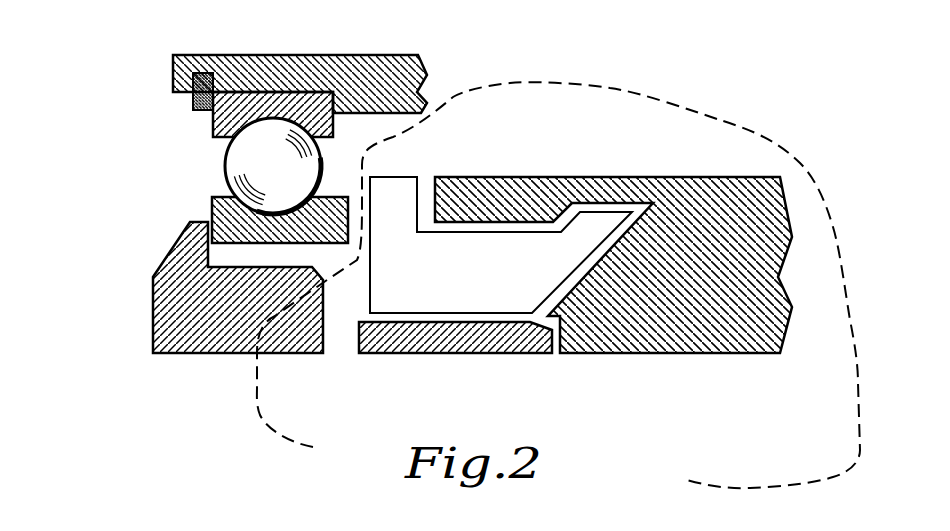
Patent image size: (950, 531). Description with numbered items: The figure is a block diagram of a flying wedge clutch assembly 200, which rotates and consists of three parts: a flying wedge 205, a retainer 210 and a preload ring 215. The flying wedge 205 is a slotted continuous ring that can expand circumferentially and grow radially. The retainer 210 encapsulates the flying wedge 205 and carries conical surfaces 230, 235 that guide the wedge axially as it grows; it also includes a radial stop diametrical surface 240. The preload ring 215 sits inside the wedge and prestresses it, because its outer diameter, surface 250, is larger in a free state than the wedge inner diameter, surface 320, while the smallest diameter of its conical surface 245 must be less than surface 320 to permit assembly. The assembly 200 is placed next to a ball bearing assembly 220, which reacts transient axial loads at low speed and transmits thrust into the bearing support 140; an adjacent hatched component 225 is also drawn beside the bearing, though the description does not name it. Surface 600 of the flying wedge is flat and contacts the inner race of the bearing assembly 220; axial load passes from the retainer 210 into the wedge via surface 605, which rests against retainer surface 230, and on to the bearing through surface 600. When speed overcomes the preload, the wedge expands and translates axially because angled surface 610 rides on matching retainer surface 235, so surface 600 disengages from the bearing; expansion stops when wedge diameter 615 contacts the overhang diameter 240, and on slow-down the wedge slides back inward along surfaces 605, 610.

The bearing support 140 is at (394, 93).
The flying wedge clutch assembly 200 is at (558, 285).
The flying wedge 205 is at (469, 288).
The retainer 210 is at (734, 281).
The preload ring 215 is at (380, 352).
The ball bearing assembly 220 is at (168, 163).
The support block 225 is at (168, 251).
The retainer tapered surface 230 is at (620, 244).
The retainer tapered surface 235 is at (554, 203).
The radial stop diametrical surface 240 is at (487, 213).
The conical surface 245 is at (537, 331).
The preload ring outer diameter surface 250 is at (421, 326).
The flying wedge inner diameter surface 320 is at (410, 313).
The flat surface 600 is at (373, 259).
The angled surface 605 is at (556, 279).
The angled surface 610 is at (582, 214).
The flying wedge diametrical surface 615 is at (483, 237).